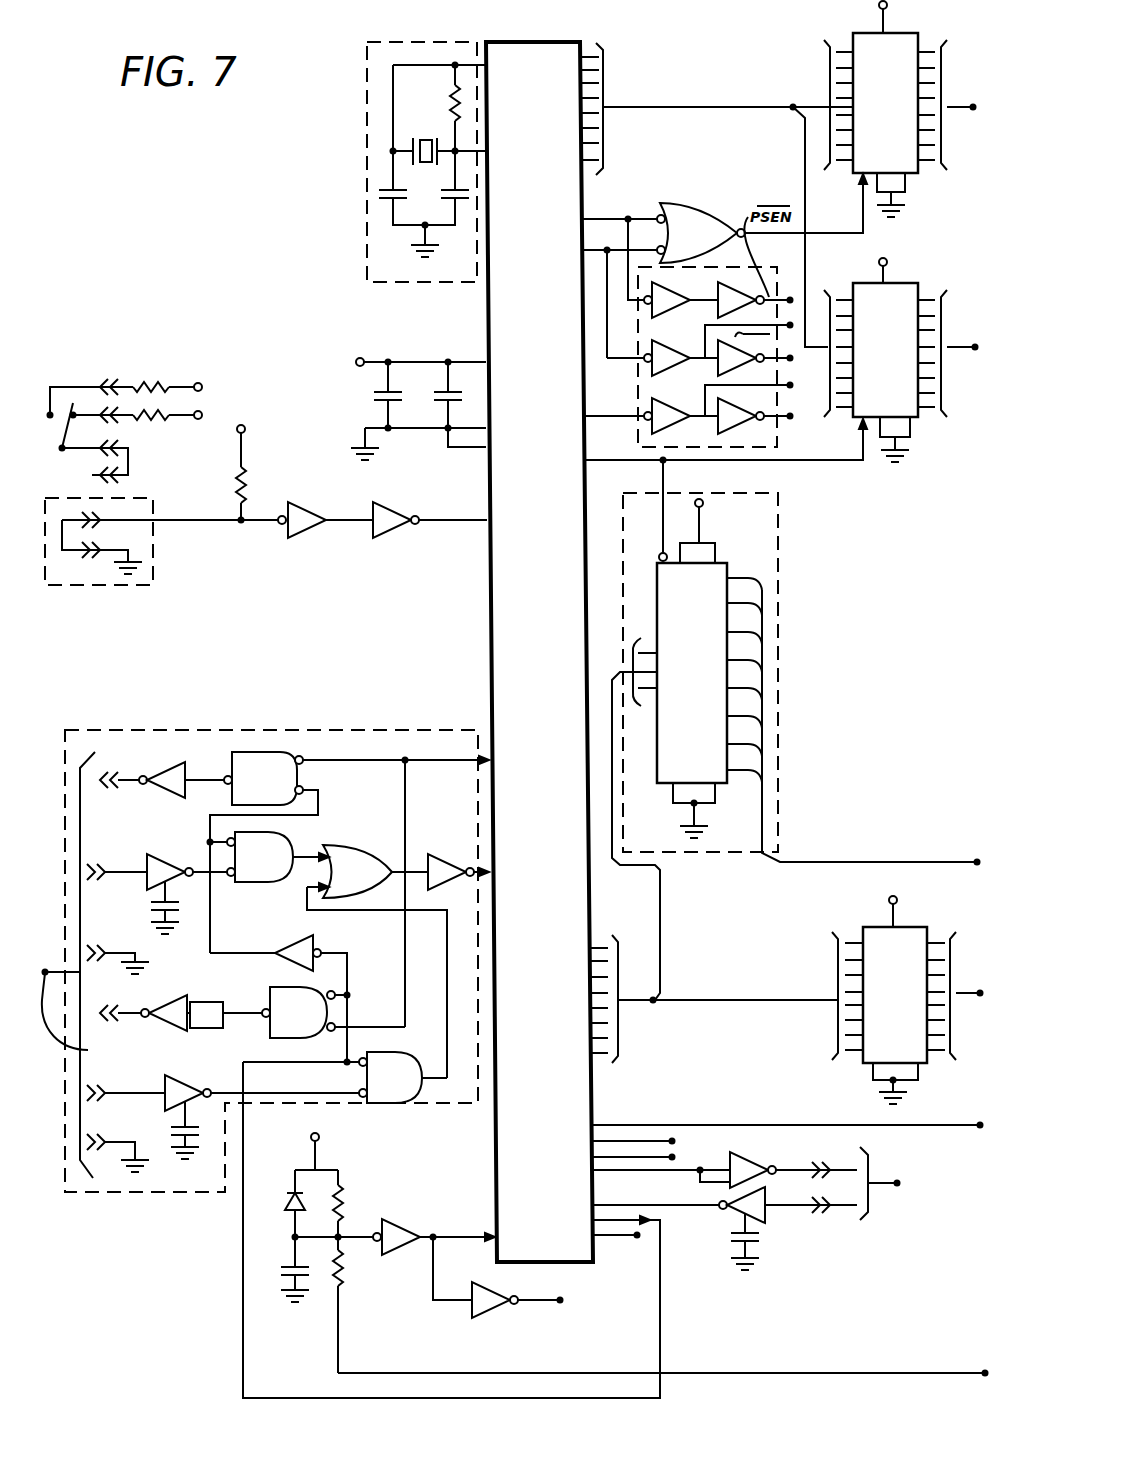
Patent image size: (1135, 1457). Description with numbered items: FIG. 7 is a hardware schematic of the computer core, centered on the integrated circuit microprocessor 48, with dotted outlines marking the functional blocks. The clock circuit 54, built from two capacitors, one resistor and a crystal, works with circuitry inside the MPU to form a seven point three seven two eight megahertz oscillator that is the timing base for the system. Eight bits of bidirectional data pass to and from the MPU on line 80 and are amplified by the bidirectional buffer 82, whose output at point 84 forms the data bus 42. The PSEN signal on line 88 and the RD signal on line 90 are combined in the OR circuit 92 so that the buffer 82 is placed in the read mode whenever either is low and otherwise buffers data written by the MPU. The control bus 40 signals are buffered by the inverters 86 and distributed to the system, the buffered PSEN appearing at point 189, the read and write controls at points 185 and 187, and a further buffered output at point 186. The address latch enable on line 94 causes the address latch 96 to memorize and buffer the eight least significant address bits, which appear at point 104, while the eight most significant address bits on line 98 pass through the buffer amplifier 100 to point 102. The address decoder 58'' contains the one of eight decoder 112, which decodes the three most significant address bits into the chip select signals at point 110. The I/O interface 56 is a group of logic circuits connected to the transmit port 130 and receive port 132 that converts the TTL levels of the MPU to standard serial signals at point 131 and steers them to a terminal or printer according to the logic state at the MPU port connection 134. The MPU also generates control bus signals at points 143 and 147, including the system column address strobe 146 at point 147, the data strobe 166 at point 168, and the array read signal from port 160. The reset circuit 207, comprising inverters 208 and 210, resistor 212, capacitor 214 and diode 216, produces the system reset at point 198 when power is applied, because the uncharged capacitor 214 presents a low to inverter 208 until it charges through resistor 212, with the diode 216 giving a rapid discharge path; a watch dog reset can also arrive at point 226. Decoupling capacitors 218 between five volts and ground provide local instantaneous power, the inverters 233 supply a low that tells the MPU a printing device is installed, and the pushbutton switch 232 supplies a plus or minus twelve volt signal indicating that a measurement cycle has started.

The control bus 40 is at (800, 1124).
The data bus 42 is at (960, 106).
The microprocessor 48 is at (556, 692).
The clock circuit 54 is at (352, 128).
The I/O interface 56 is at (306, 947).
The address decoder 58'' is at (726, 730).
The line 80 is at (703, 107).
The bidirectional buffer 82 is at (868, 33).
The point 84 is at (972, 109).
The inverters 86 is at (638, 378).
The line 88 is at (602, 219).
The line 90 is at (596, 235).
The OR circuit 92 is at (688, 208).
The line 94 is at (626, 460).
The address latch 96 is at (893, 283).
The line 98 is at (635, 1003).
The buffer amplifier 100 is at (913, 927).
The point 102 is at (980, 995).
The point 104 is at (975, 349).
The point 110 is at (977, 862).
The one of eight decoder 112 is at (718, 560).
The transmit port 130 is at (490, 764).
The point 131 is at (494, 1120).
The receive port 132 is at (490, 874).
The MPU port connection 134 is at (590, 1218).
The point 143 is at (980, 1127).
The system column address strobe 146 is at (616, 1141).
The point 147 is at (674, 1140).
The MPU port 160 is at (637, 1237).
The data strobe 166 is at (612, 1172).
The point 168 is at (676, 1157).
The point 185 is at (808, 360).
The buffered output line 186 is at (808, 390).
The point 187 is at (794, 417).
The point 189 is at (790, 298).
The point 198 is at (562, 1301).
The reset circuit 207 is at (397, 1243).
The inverter 208 is at (405, 1222).
The inverter 210 is at (492, 1316).
The resistor 212 is at (346, 1212).
The capacitor 214 is at (270, 1280).
The diode 216 is at (280, 1195).
The decoupling capacitors 218 is at (474, 372).
The point 226 is at (985, 1371).
The pushbutton switch 232 is at (57, 431).
The inverters 233 is at (360, 542).